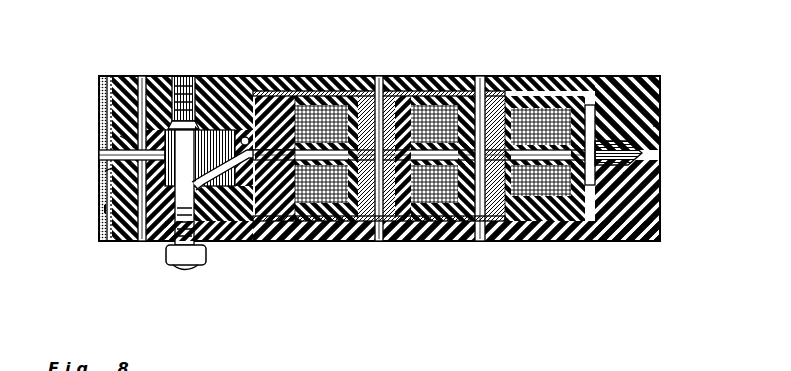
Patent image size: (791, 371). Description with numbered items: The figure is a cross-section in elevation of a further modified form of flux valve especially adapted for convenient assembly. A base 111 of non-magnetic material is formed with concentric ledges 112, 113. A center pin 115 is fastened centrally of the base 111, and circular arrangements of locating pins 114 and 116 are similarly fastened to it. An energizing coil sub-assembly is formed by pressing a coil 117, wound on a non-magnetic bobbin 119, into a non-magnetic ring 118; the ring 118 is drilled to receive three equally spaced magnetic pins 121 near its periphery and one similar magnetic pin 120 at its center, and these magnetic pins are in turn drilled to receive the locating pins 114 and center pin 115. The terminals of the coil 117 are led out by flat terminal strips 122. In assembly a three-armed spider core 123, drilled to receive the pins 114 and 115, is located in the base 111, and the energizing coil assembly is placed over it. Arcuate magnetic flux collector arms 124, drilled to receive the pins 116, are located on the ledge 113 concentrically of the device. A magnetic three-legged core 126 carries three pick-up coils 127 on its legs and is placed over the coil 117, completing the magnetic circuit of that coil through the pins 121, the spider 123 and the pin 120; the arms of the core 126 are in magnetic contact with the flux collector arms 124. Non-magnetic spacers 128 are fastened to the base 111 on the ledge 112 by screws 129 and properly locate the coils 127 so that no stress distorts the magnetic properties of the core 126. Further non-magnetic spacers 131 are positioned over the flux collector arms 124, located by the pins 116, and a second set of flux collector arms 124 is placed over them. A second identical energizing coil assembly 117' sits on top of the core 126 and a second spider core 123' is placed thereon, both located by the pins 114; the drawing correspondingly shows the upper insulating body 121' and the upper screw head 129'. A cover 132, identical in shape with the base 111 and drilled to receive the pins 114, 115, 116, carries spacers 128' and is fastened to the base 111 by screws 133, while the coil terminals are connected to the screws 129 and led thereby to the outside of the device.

The base 111 is at (605, 233).
The ledge 112 is at (220, 235).
The ledge 113 is at (97, 197).
The locating pins 114 is at (472, 68).
The center pin 115 is at (370, 68).
The locating pins 116 is at (135, 68).
The energizing coil 117 is at (434, 237).
The second energizing coil assembly 117' is at (444, 94).
The ring 118 is at (272, 233).
The bobbin 119 is at (455, 233).
The magnetic pin 120 is at (358, 232).
The magnetic pins 121 is at (548, 235).
The insulator 121' is at (545, 126).
The terminal strips 122 is at (213, 68).
The spider core 123 is at (306, 203).
The second spider core 123' is at (443, 127).
The flux collector arms 124 is at (120, 132).
The three-legged core 126 is at (582, 118).
The pick-up coils 127 is at (552, 100).
The spacers 128 is at (220, 248).
The spacers 128' is at (379, 66).
The screws 129 is at (177, 220).
The bolt head 129' is at (187, 82).
The spacers 131 is at (107, 143).
The cover 132 is at (650, 67).
The screws 133 is at (103, 66).